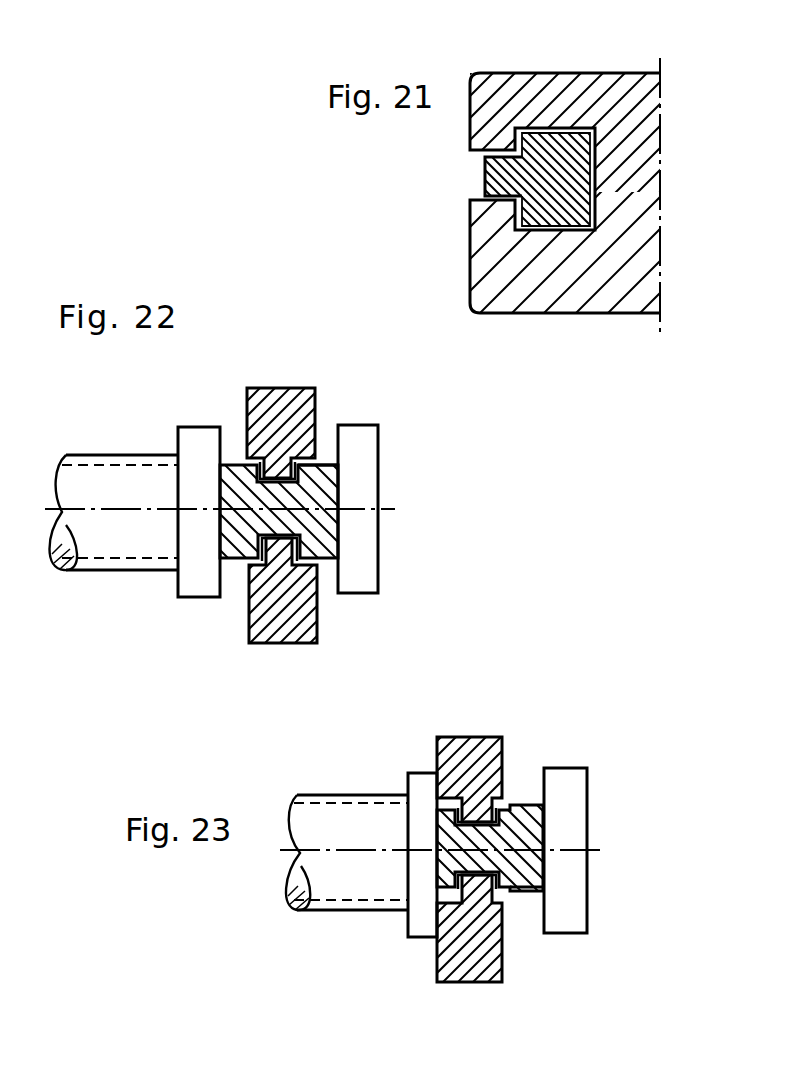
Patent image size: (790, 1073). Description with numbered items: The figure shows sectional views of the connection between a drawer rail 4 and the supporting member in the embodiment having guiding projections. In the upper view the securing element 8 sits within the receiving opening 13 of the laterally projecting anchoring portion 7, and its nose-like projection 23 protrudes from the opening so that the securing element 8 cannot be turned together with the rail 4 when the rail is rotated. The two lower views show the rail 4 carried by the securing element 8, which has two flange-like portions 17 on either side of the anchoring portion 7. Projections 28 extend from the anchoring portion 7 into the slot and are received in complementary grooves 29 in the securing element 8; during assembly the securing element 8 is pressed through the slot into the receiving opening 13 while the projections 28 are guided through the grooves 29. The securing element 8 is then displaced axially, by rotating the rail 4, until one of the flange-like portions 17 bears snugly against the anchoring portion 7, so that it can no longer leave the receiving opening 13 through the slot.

In FIG. 22, the rail 4 is at (92, 468).
In FIG. 23, the rail 4 is at (319, 803).
In FIG. 21, the anchoring portion 7 is at (557, 68).
In FIG. 22, the anchoring portion 7 is at (291, 376).
In FIG. 23, the anchoring portion 7 is at (453, 722).
In FIG. 21, the securing element 8 is at (553, 190).
In FIG. 22, the securing element 8 is at (305, 504).
In FIG. 23, the securing element 8 is at (510, 865).
In FIG. 21, the receiving opening 13 is at (598, 155).
In FIG. 22, the flange-like portions 17 is at (356, 555).
In FIG. 23, the flange-like portions 17 is at (415, 788).
In FIG. 21, the projection 23 is at (483, 175).
In FIG. 22, the projections 28 is at (277, 468).
In FIG. 23, the projections 28 is at (468, 812).
In FIG. 22, the grooves 29 is at (300, 468).
In FIG. 23, the grooves 29 is at (510, 885).